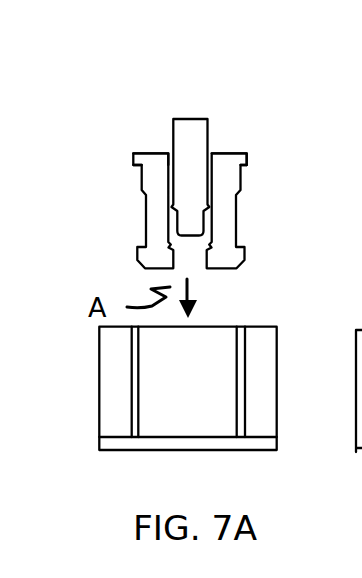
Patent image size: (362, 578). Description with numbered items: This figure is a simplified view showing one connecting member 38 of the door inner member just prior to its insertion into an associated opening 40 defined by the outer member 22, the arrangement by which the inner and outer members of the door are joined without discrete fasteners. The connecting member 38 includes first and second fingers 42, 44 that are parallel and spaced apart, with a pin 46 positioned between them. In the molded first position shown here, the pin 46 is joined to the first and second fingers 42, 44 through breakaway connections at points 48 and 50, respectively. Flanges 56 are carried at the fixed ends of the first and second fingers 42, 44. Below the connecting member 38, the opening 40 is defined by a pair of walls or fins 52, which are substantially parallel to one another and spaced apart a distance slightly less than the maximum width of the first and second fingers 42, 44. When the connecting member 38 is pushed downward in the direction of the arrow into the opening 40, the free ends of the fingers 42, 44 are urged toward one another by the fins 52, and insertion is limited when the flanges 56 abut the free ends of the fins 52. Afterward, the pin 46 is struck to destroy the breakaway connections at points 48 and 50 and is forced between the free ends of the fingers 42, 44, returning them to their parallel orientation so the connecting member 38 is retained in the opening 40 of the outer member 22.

The outer member 22 is at (99, 458).
The connecting member 38 is at (290, 100).
The opening 40 is at (233, 362).
The first finger 42 is at (148, 249).
The second finger 44 is at (220, 253).
The pin 46 is at (190, 134).
The breakaway connection point 48 is at (171, 164).
The breakaway connection point 50 is at (243, 156).
The fin 52 is at (138, 377).
The flange 56 is at (139, 163).